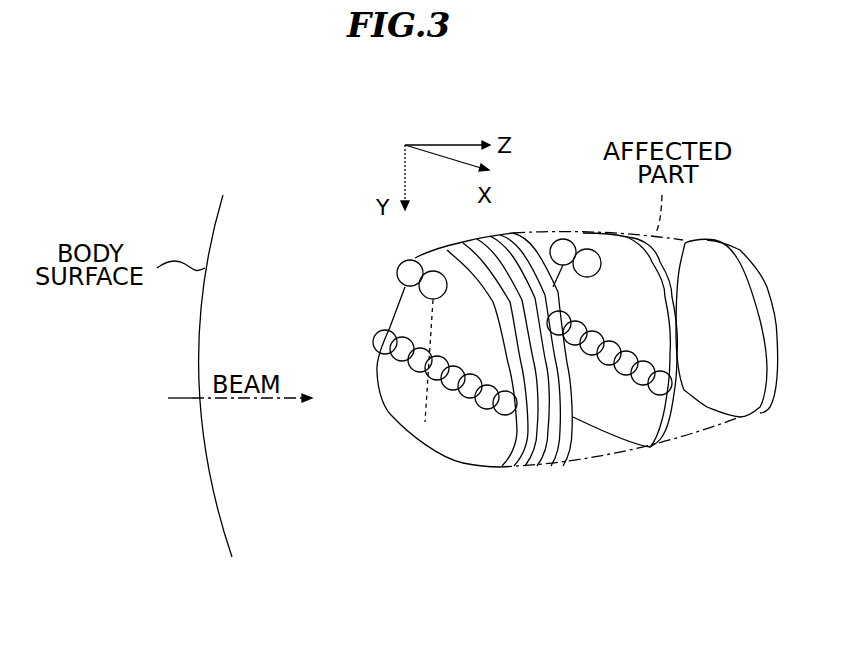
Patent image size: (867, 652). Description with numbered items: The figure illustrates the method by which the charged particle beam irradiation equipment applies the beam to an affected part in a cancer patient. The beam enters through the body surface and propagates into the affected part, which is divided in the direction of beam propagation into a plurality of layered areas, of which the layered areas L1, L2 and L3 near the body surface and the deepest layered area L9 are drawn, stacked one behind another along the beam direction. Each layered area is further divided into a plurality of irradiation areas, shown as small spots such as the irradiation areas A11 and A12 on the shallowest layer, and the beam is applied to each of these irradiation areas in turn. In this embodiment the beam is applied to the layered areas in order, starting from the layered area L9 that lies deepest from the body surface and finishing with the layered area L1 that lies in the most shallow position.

The irradiation area A11 is at (398, 268).
The irradiation area A12 is at (425, 290).
The layered area L1 is at (507, 468).
The layered area L2 is at (530, 468).
The layered area L3 is at (555, 472).
The layered area L9 is at (760, 418).